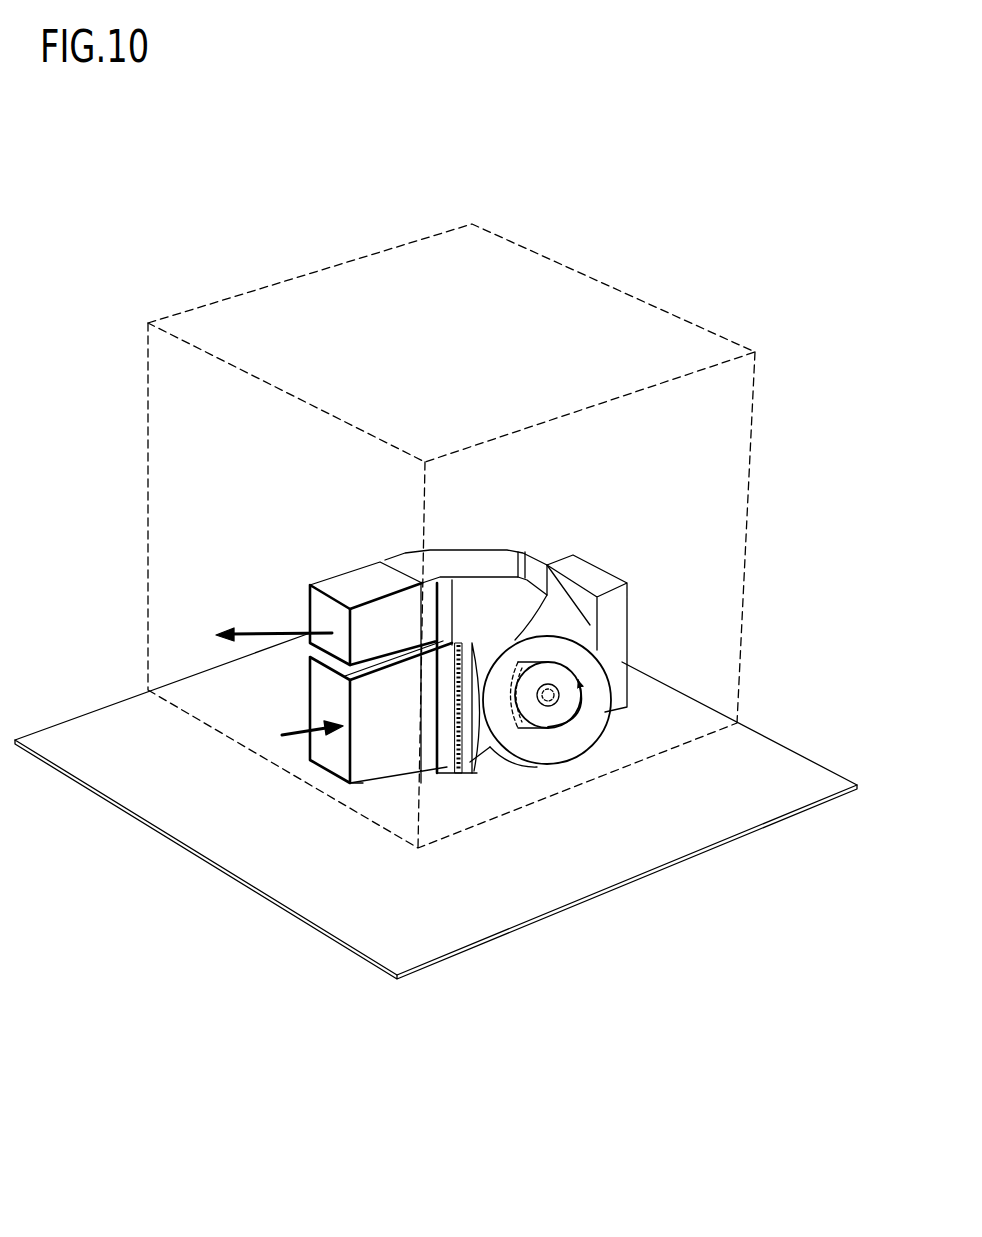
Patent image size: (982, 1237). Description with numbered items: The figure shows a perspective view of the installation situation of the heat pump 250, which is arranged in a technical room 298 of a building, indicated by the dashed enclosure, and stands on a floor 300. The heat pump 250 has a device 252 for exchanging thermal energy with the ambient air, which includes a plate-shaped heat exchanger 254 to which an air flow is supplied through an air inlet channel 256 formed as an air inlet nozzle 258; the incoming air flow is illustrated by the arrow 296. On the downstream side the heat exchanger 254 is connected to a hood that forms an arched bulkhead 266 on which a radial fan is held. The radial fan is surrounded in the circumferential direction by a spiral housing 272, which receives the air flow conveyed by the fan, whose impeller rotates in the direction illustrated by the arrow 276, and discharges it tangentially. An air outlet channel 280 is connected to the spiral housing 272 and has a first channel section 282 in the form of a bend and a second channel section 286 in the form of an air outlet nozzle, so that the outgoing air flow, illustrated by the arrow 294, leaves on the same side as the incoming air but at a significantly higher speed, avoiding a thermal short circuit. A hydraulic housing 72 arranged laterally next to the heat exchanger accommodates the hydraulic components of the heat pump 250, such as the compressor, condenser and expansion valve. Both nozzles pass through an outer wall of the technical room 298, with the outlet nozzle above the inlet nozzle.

The hydraulic housing 72 is at (612, 602).
The heat pump 250 is at (637, 514).
The device for exchanging thermal energy with the ambient air 252 is at (508, 771).
The heat exchanger 254 is at (450, 765).
The air inlet channel 256 is at (397, 760).
The air inlet nozzle 258 is at (363, 783).
The arched bulkhead 266 is at (482, 760).
The spiral housing 272 is at (577, 738).
The arrow 276 is at (583, 735).
The air outlet channel 280 is at (467, 546).
The first channel section 282 is at (512, 555).
The second channel section 286 is at (337, 588).
The arrow 294 is at (265, 633).
The arrow 296 is at (282, 735).
The technical room 298 is at (182, 492).
The floor 300 is at (67, 735).